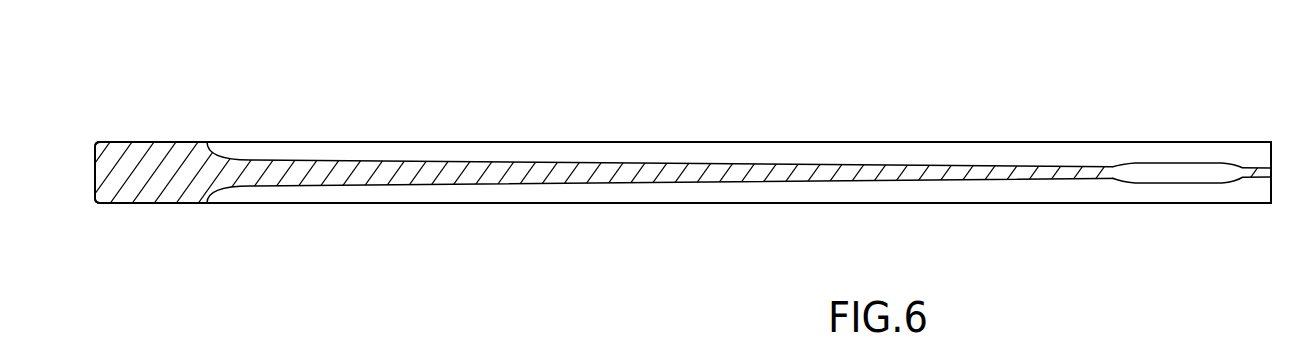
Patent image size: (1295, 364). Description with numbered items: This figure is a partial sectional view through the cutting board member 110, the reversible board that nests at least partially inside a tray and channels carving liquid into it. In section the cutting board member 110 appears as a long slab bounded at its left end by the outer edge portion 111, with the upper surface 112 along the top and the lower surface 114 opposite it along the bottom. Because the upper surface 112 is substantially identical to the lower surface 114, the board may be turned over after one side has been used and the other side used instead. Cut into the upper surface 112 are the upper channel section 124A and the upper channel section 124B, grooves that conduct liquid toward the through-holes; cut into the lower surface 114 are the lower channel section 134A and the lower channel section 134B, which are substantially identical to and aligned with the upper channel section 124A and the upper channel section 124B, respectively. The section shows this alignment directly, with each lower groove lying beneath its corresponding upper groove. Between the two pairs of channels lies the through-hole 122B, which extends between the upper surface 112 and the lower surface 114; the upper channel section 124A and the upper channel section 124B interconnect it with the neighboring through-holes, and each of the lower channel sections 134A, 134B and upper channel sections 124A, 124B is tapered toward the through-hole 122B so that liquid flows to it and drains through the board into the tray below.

The cutting board member 110 is at (918, 67).
The outer edge portion 111 is at (95, 173).
The upper surface 112 is at (168, 205).
The lower surface 114 is at (167, 140).
The lower channel section 134A is at (588, 150).
The upper channel section 124A is at (588, 195).
The through-hole 122B is at (1183, 172).
The lower channel section 134B is at (1255, 155).
The upper channel section 124B is at (1255, 188).